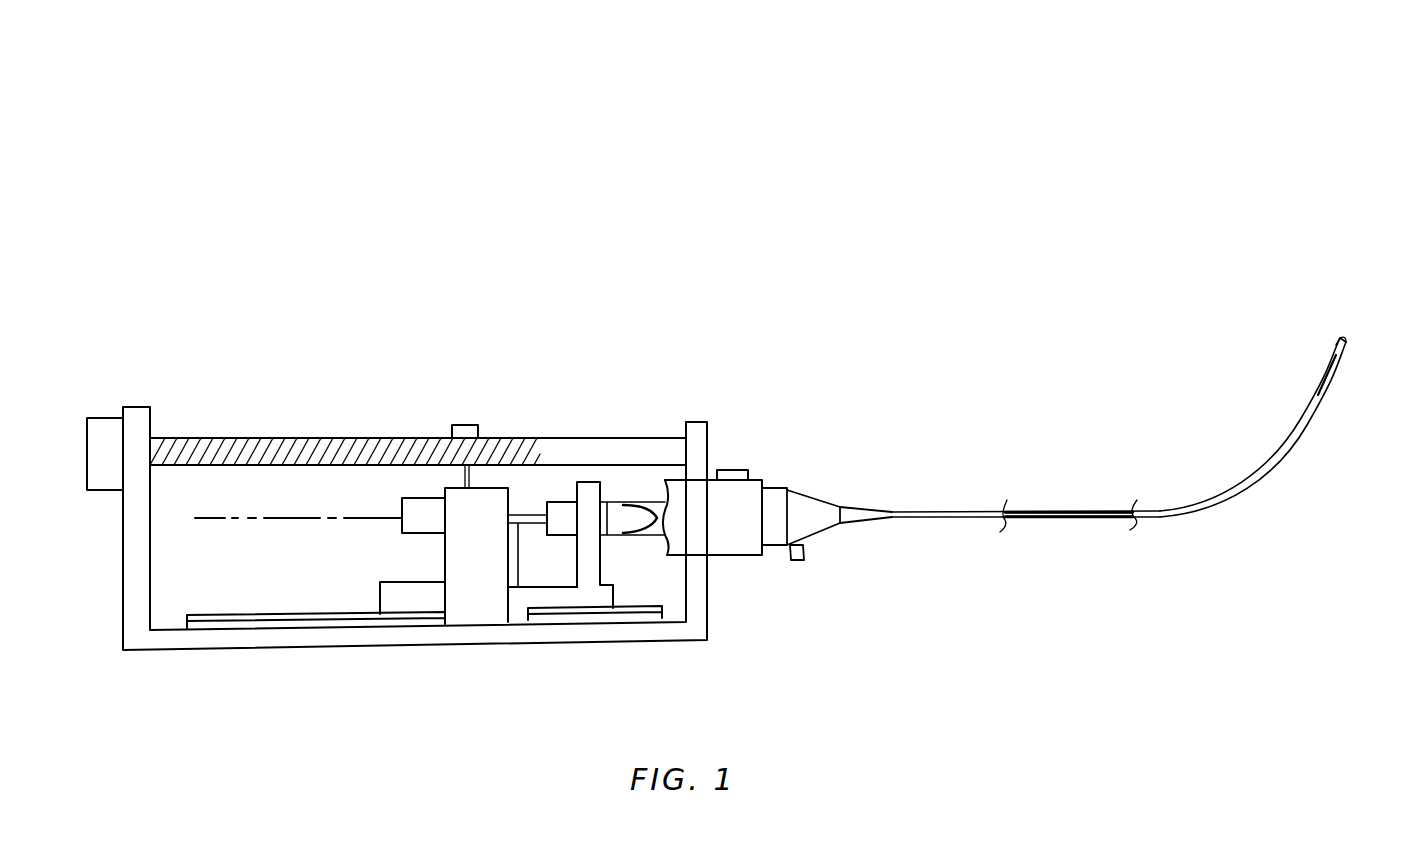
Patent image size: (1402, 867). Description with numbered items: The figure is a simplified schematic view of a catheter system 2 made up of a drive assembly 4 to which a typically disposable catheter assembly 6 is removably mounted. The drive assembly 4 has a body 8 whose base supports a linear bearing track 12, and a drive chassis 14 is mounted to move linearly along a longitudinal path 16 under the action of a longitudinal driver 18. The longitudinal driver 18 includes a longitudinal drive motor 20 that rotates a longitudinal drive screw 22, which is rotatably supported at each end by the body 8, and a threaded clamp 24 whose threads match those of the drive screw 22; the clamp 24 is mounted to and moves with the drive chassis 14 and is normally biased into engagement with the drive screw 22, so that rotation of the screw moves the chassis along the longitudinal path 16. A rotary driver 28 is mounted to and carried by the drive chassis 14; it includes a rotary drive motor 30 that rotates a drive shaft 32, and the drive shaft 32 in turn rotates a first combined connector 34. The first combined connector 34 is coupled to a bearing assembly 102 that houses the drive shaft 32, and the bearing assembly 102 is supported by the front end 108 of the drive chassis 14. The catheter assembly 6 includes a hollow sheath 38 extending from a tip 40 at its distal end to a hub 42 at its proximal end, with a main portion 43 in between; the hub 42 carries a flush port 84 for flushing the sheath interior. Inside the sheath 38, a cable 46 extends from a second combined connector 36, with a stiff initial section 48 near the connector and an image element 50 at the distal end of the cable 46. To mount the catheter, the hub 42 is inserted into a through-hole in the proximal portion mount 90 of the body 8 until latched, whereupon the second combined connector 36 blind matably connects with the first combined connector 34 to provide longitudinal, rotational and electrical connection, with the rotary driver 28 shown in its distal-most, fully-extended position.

The catheter system 2 is at (932, 99).
The drive assembly 4 is at (537, 338).
The catheter assembly 6 is at (1120, 380).
The body 8 is at (312, 647).
The linear bearing track 12 is at (233, 614).
The drive chassis 14 is at (485, 592).
The longitudinal path 16 is at (266, 521).
The longitudinal driver 18 is at (343, 388).
The longitudinal drive motor 20 is at (112, 418).
The longitudinal drive screw 22 is at (248, 436).
The threaded clamp 24 is at (466, 425).
The rotary driver 28 is at (597, 432).
The rotary drive motor 30 is at (420, 520).
The drive shaft 32 is at (522, 548).
The first combined connector 34 is at (617, 505).
The second combined connector 36 is at (650, 505).
The hollow sheath 38 is at (1165, 522).
The tip 40 is at (1347, 340).
The hub 42 is at (798, 490).
The main portion 43 is at (1158, 512).
The cable 46 is at (1090, 518).
The stiff initial section 48 is at (1022, 518).
The image element 50 is at (1337, 360).
The flush port 84 is at (804, 552).
The proximal portion mount 90 is at (733, 548).
The bearing assembly 102 is at (562, 497).
The front end 108 is at (588, 565).